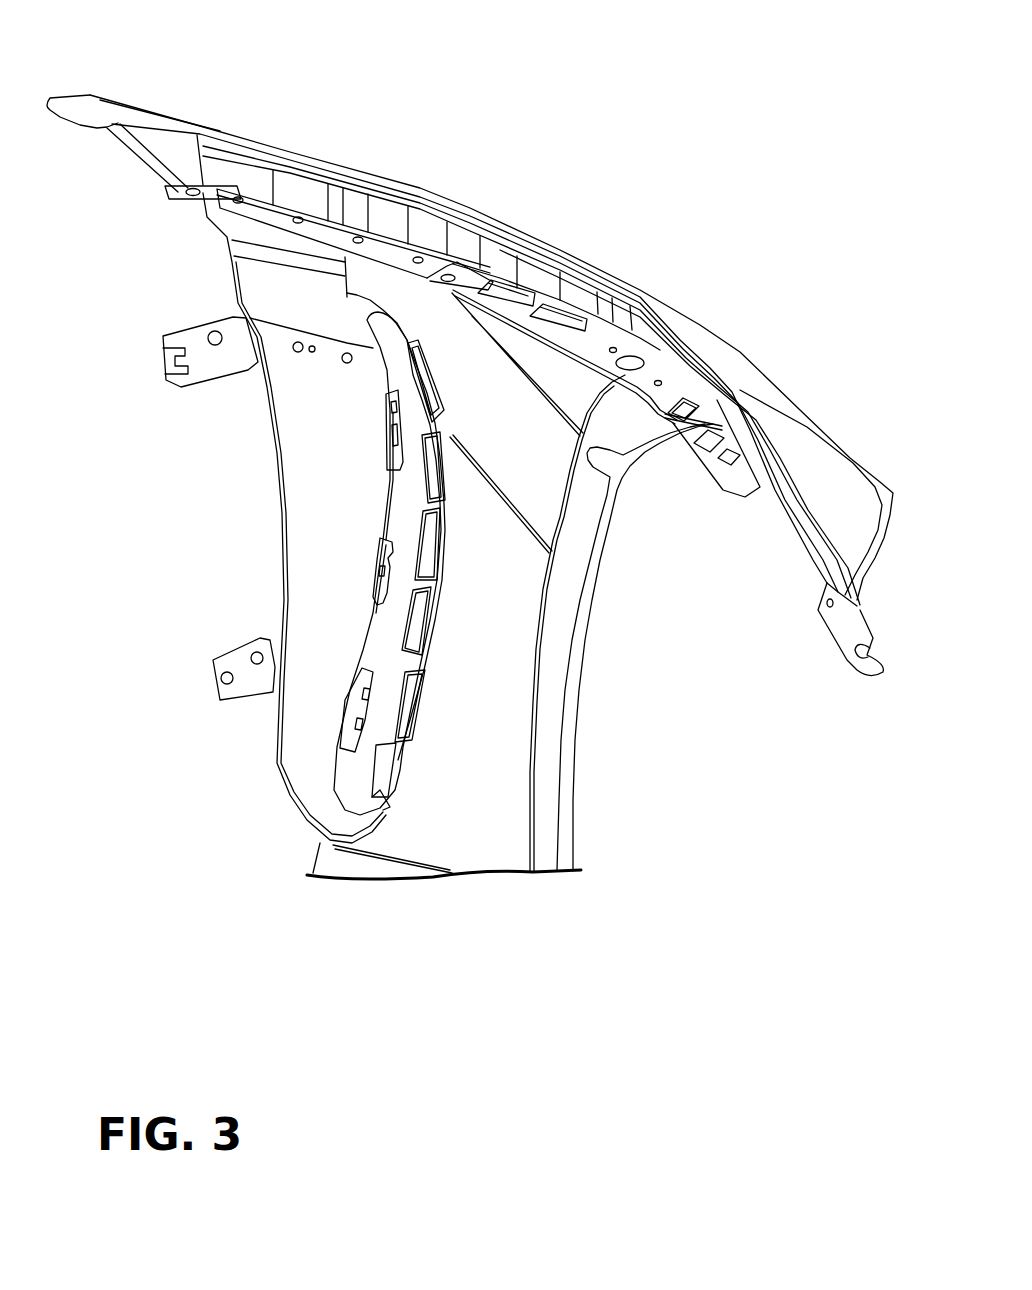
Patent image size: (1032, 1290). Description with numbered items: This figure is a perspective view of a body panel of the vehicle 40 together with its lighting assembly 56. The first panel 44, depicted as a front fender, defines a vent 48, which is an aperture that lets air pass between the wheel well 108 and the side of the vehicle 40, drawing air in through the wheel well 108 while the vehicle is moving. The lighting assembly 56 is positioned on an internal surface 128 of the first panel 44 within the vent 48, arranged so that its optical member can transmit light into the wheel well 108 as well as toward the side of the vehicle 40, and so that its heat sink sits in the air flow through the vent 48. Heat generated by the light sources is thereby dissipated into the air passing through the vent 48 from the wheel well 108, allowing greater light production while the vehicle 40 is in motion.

The vehicle 40 is at (522, 110).
The first panel 44 is at (735, 370).
The vent 48 is at (390, 697).
The lighting assembly 56 is at (383, 768).
The wheel well 108 is at (641, 666).
The internal surface 128 is at (500, 622).